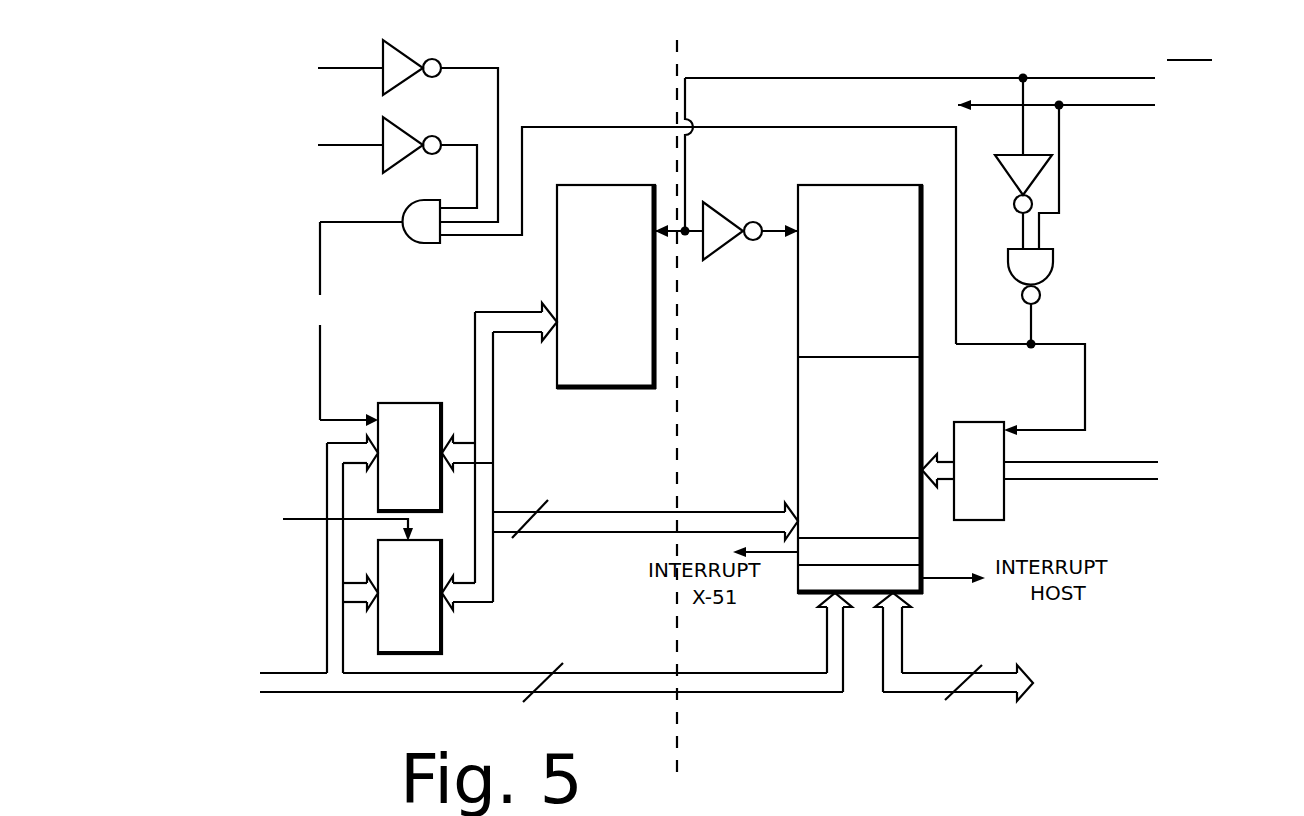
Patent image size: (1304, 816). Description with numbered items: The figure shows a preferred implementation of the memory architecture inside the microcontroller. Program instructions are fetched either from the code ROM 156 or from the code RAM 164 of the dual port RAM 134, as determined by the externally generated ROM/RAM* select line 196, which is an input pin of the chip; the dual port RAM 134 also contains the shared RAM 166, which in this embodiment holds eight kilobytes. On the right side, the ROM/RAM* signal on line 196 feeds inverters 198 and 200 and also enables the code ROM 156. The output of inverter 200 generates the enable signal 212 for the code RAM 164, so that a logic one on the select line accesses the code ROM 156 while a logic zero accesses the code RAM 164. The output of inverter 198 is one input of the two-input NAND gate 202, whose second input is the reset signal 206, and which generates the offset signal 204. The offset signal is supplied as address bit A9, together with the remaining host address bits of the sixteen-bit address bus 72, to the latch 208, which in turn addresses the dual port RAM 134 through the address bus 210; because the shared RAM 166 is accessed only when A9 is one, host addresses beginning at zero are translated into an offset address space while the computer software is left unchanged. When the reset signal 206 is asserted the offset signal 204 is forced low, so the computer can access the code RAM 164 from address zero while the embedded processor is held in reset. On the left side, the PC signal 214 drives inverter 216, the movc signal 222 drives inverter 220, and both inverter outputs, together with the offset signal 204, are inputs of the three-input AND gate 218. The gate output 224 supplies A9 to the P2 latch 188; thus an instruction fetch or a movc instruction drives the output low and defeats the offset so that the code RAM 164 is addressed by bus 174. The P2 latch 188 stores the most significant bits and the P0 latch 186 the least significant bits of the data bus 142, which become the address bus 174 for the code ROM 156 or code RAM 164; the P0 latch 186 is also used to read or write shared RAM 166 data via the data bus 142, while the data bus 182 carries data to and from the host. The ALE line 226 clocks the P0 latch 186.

The PC signal 214 is at (350, 63).
The inverter 216 is at (407, 76).
The inverter 220 is at (406, 155).
The movc signal 222 is at (340, 146).
The output of AND gate (A9) 224 is at (320, 247).
The three-input AND gate 218 is at (428, 246).
The code ROM 156 is at (606, 184).
The ROM/RAM* select line 196 is at (1067, 77).
The inverter 200 is at (728, 242).
The enable signal 212 is at (773, 236).
The dual port RAM 134 is at (808, 178).
The code RAM 164 is at (878, 185).
The shared RAM 166 is at (921, 400).
The reset signal 206 is at (1135, 107).
The inverter 198 is at (1031, 171).
The two-input NAND gate 202 is at (1055, 269).
The offset signal 204 is at (1033, 327).
The latch 208 is at (1004, 510).
The address bus 210 is at (945, 483).
The 16-bit address bus 72 is at (1054, 482).
The address bus 174 is at (590, 510).
The P2 latch 188 is at (444, 418).
The P0 latch 186 is at (444, 627).
The ALE line 226 is at (300, 521).
The data bus 142 is at (650, 695).
The data bus 182 is at (915, 695).